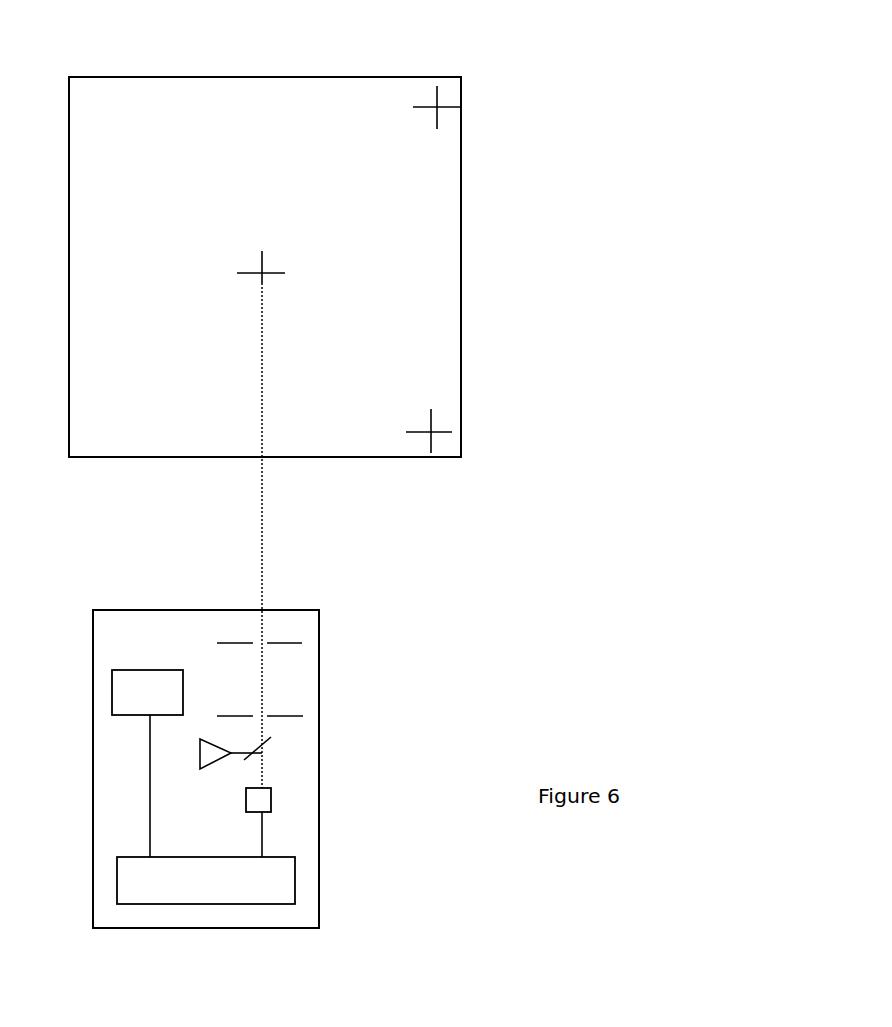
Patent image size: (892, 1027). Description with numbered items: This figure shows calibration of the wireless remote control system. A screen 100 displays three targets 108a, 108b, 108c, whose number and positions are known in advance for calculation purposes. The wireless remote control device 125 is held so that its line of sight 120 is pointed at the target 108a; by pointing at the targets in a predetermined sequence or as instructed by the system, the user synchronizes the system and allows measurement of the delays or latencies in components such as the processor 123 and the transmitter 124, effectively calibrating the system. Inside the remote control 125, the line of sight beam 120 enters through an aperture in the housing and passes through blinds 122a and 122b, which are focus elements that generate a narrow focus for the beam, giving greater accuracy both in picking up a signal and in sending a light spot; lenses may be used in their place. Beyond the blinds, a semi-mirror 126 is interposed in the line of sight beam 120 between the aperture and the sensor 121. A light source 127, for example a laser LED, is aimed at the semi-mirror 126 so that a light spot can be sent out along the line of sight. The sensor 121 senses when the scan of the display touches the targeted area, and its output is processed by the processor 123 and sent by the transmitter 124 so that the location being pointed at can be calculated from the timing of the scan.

The screen 100 is at (365, 73).
The target 108a is at (283, 275).
The target 108b is at (445, 109).
The target 108c is at (438, 437).
The line of sight 120 is at (259, 478).
The sensor 121 is at (272, 800).
The blind 122a is at (302, 643).
The blind 122b is at (303, 716).
The processor 123 is at (206, 880).
The transmitter 124 is at (147, 763).
The wireless remote control device 125 is at (140, 930).
The semi-mirror 126 is at (271, 742).
The light source 127 is at (200, 752).